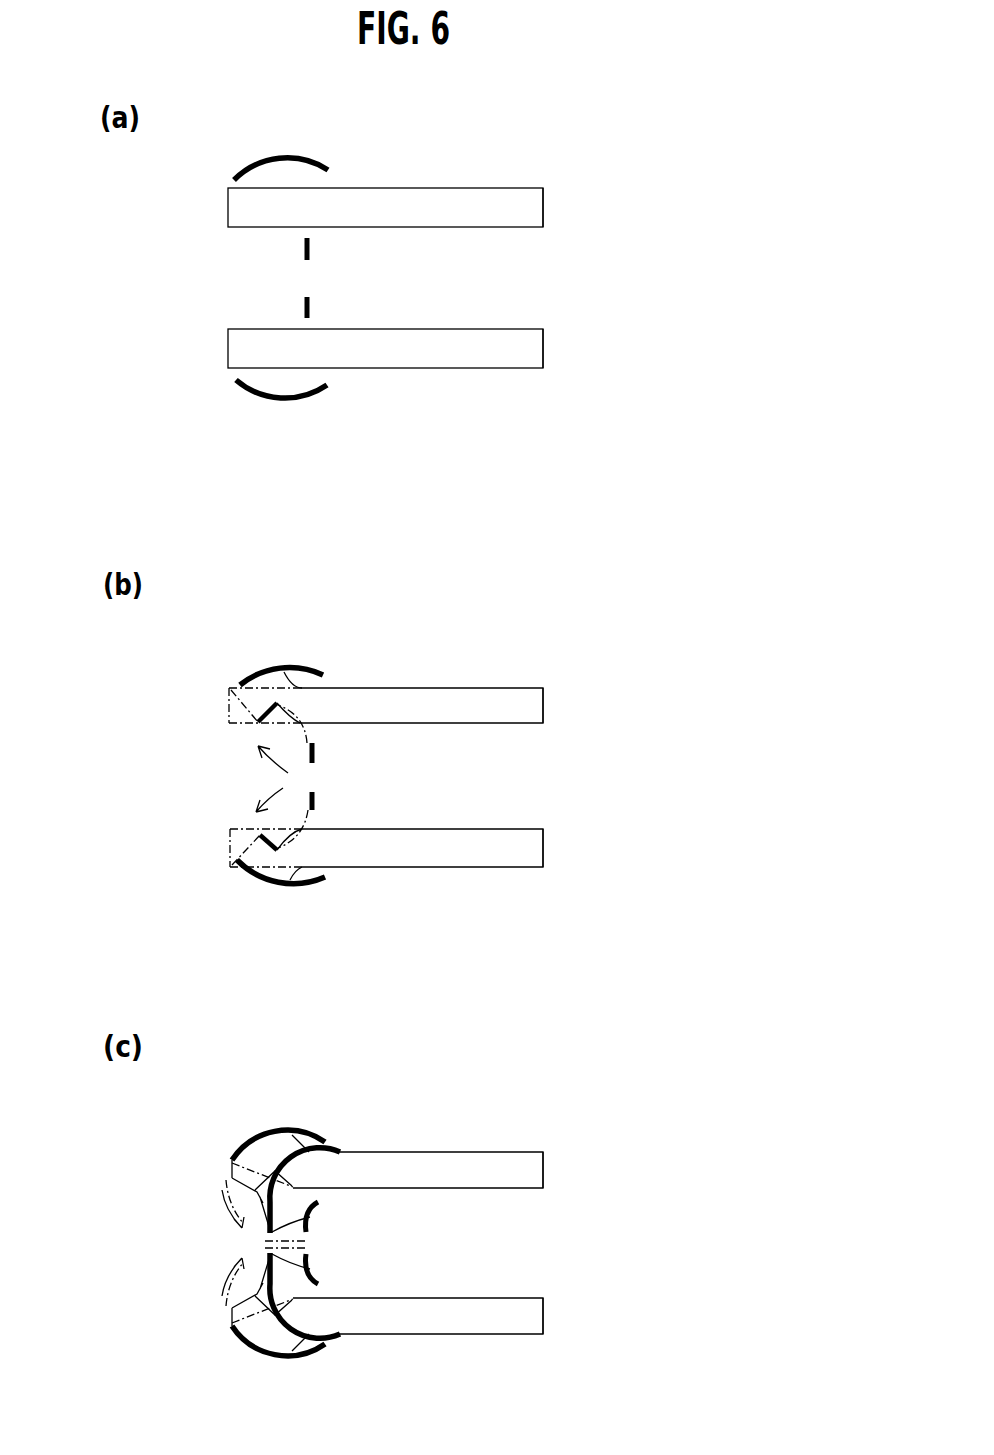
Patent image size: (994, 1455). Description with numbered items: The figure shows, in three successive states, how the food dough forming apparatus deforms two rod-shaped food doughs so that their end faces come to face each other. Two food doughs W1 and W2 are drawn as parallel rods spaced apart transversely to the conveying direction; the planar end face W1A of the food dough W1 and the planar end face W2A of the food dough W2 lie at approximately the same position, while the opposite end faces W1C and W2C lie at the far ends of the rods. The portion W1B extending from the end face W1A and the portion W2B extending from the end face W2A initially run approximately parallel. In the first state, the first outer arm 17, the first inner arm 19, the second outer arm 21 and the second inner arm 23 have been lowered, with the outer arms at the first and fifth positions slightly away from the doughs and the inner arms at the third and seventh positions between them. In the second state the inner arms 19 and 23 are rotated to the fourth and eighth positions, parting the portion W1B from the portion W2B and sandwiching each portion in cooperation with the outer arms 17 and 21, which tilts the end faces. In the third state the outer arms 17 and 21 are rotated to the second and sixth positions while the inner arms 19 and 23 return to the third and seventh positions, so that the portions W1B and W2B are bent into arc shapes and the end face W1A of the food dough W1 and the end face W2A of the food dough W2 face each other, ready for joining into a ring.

The first outer arm 17 is at (283, 400).
The first inner arm 19 is at (310, 308).
The second outer arm 21 is at (285, 158).
The second inner arm 23 is at (310, 250).
The food dough W1 is at (497, 329).
The food dough W2 is at (497, 188).
The end face W1A is at (228, 345).
The one end side portion W1B is at (248, 329).
The other end face W1C is at (543, 349).
The end face W2A is at (228, 205).
The portion W2B is at (270, 229).
The other end face W2C is at (543, 208).